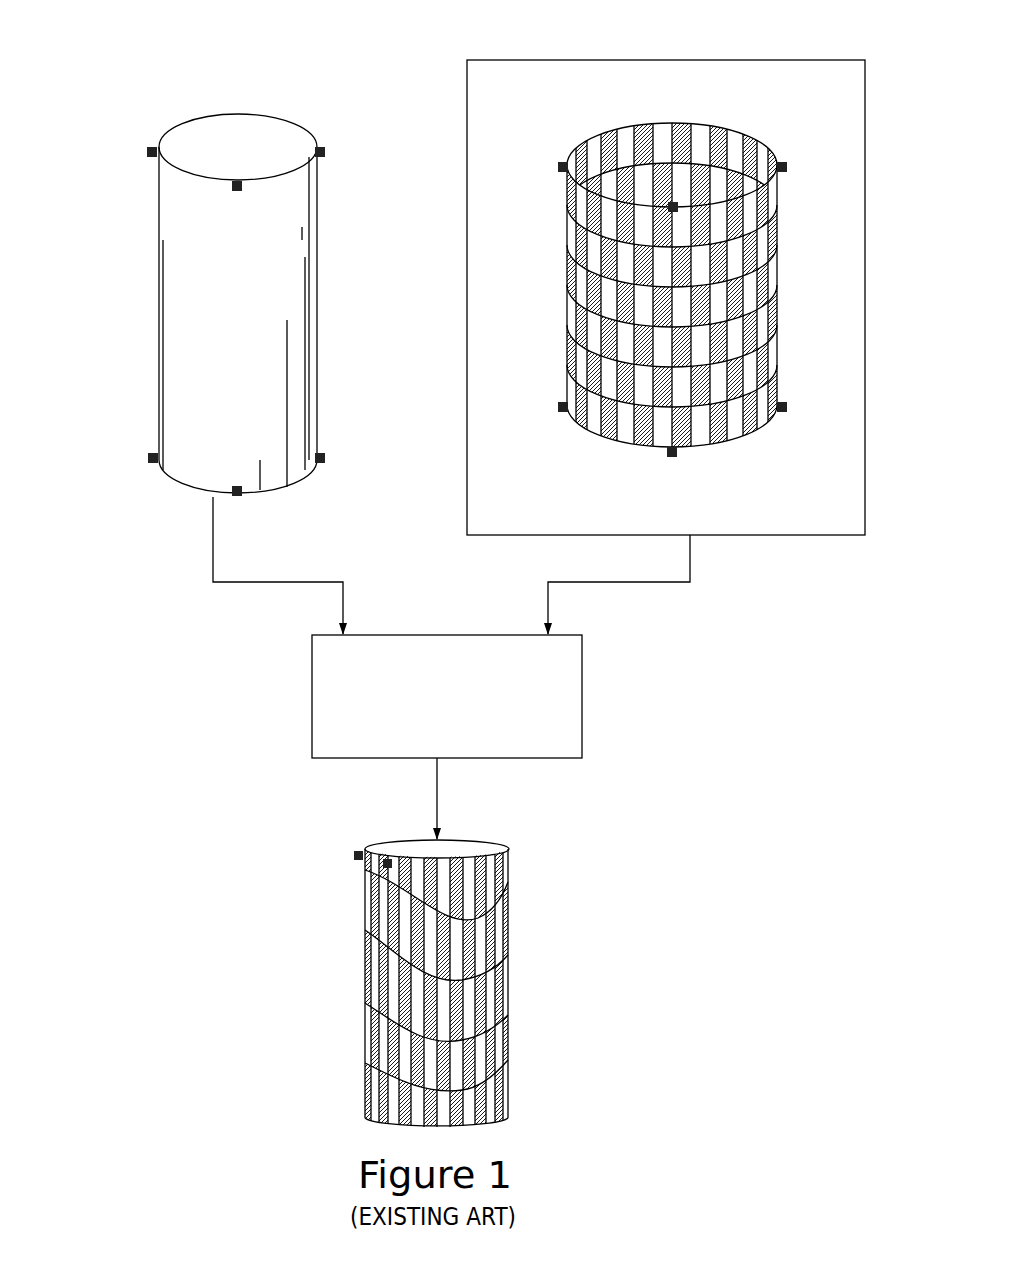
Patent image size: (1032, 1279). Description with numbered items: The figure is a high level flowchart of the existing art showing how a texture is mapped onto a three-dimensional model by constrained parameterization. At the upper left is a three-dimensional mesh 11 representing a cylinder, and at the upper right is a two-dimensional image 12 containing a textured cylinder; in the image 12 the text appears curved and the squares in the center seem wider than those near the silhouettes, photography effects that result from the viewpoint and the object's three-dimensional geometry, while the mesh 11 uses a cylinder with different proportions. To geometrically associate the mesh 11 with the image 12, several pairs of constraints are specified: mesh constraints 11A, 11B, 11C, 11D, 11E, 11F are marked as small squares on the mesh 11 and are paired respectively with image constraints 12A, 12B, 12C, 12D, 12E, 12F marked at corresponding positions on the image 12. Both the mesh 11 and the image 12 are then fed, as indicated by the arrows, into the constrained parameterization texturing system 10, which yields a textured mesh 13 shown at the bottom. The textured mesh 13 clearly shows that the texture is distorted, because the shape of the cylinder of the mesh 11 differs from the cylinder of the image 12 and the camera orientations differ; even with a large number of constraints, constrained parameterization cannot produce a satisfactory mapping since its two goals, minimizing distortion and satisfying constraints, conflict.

The constrained parameterization texturing system 10 is at (582, 693).
The 3D mesh 11 is at (321, 83).
The constraint 11A is at (147, 458).
The constraint 11B is at (240, 498).
The constraint 11C is at (330, 458).
The constraint 11D is at (147, 153).
The constraint 11E is at (237, 181).
The constraint 11F is at (328, 153).
The 2D image 12 is at (790, 60).
The constraint 12A is at (560, 413).
The constraint 12B is at (671, 458).
The constraint 12C is at (789, 407).
The constraint 12D is at (558, 166).
The constraint 12E is at (673, 200).
The constraint 12F is at (788, 166).
The textured mesh 13 is at (529, 990).